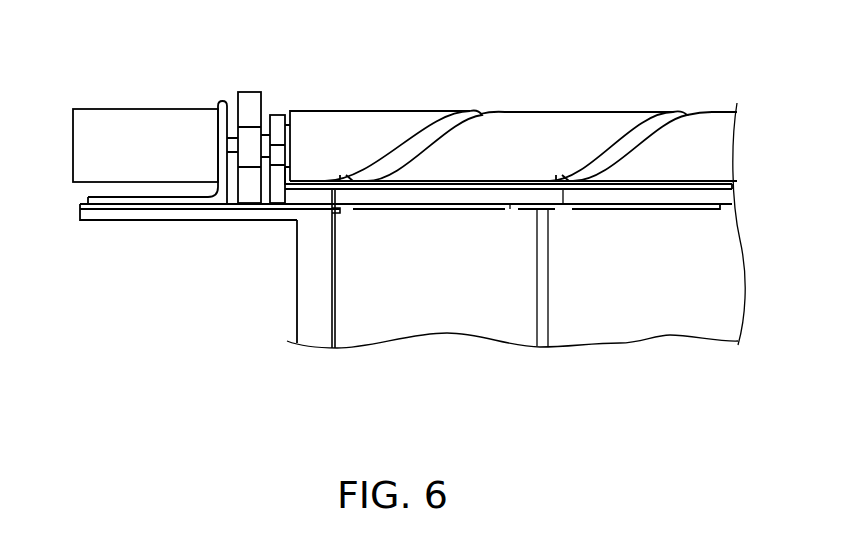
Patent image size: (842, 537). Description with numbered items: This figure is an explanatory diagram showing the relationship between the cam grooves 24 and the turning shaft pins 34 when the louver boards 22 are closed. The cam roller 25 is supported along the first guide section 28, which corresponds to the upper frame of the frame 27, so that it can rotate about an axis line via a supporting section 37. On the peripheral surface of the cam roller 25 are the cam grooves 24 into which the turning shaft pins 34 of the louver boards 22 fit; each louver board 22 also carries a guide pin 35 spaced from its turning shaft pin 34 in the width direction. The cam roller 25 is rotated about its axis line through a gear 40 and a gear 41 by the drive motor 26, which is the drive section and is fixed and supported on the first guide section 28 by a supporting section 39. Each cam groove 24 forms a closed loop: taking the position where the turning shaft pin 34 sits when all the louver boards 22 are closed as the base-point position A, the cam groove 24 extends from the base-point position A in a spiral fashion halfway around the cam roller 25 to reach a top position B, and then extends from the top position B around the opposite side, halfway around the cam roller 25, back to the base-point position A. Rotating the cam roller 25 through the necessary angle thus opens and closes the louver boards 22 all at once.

The louver board 22 is at (737, 258).
The cam groove 24 is at (685, 112).
The cam roller 25 is at (630, 111).
The drive motor 26 is at (98, 130).
The frame 27 is at (277, 315).
The first guide section 28 is at (717, 197).
The turning shaft pin 34 is at (346, 189).
The guide pin 35 is at (510, 204).
The supporting section 37 is at (276, 114).
The supporting section 39 is at (223, 101).
The gear 40 is at (253, 157).
The gear 41 is at (252, 92).
The base-point position A is at (332, 209).
The top position B is at (479, 111).